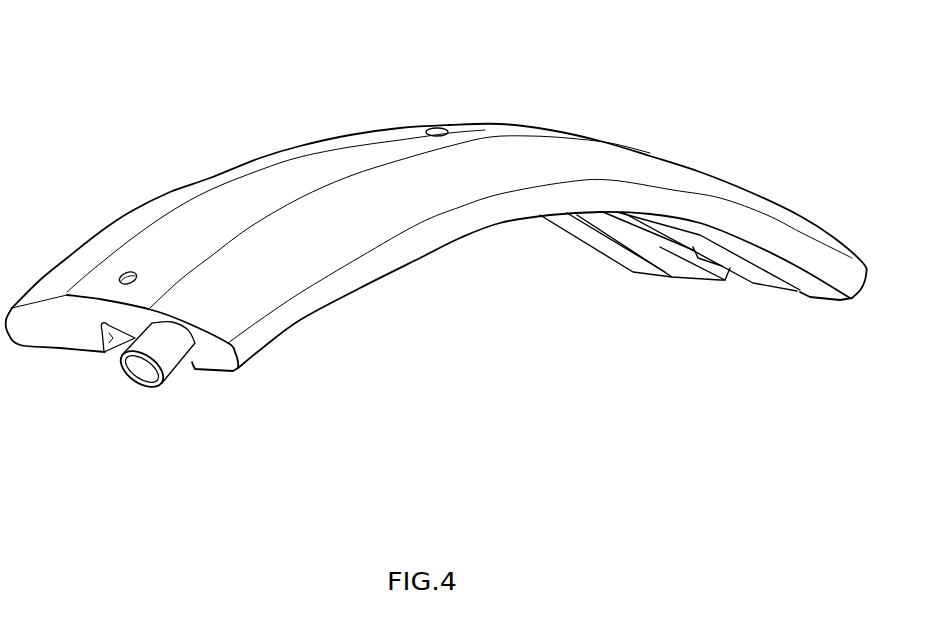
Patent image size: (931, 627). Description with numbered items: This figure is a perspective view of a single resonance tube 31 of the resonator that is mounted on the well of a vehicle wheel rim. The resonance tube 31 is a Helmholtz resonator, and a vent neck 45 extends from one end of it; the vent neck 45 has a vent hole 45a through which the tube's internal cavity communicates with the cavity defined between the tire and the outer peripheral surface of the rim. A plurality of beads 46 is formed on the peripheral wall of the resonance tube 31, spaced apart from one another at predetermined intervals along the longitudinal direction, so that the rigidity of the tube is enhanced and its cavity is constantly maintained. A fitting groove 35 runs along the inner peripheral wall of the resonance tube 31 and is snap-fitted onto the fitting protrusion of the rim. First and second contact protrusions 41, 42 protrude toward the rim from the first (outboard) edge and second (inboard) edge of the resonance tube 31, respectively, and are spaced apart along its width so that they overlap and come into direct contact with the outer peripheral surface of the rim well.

The resonance tube 31 is at (576, 100).
The fitting groove 35 is at (103, 342).
The first contact protrusion 41 is at (213, 372).
The second contact protrusion 42 is at (37, 347).
The vent neck 45 is at (148, 387).
The vent hole 45a is at (142, 372).
The bead 46 is at (122, 272).